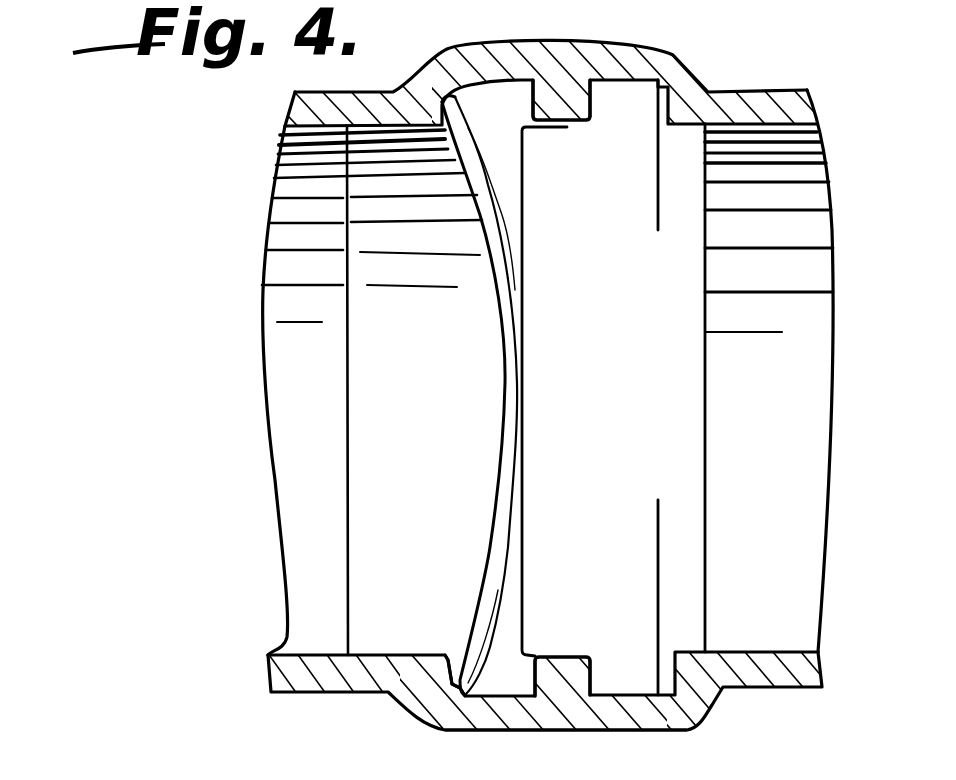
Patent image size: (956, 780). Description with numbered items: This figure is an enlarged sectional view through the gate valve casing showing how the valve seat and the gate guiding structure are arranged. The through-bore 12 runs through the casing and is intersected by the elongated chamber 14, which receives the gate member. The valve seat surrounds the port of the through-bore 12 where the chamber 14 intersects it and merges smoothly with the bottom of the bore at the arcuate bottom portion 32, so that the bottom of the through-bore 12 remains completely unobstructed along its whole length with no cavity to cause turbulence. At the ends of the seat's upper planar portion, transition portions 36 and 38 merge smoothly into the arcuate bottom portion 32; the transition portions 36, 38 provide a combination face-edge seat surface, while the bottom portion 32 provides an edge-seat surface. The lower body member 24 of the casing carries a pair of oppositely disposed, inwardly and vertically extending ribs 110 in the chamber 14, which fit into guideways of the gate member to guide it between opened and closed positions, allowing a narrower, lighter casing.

The through-bore 12 is at (793, 409).
The elongated chamber 14 is at (598, 486).
The lower body member 24 is at (532, 731).
The arcuate bottom portion 32 is at (513, 385).
The transition portion 36 is at (460, 90).
The transition portion 38 is at (443, 668).
The ribs 110 is at (567, 127).